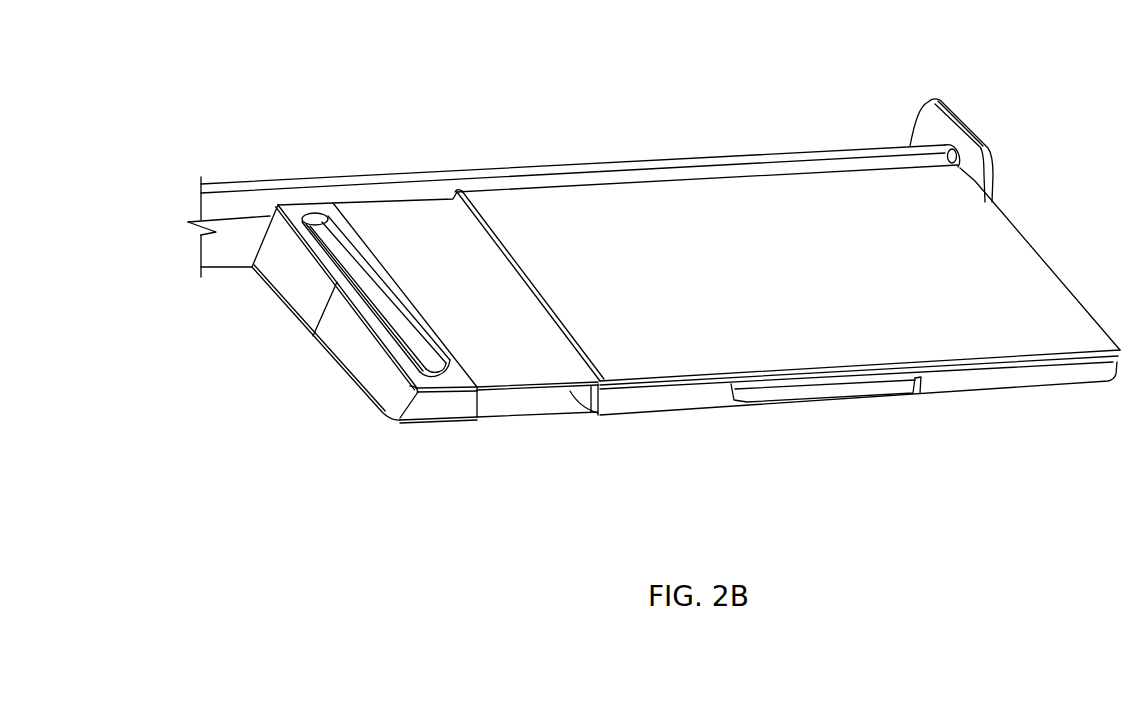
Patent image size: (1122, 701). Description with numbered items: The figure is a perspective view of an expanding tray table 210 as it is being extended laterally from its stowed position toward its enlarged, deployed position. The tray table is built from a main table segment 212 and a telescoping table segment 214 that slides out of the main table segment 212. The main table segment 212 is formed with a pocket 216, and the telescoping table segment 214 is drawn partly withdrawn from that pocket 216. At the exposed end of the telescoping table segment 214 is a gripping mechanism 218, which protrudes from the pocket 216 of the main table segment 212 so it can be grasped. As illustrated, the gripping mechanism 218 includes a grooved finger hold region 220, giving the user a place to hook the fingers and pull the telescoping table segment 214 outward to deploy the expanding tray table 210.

The expanding tray table 210 is at (268, 131).
The main table segment 212 is at (784, 275).
The telescoping table segment 214 is at (372, 331).
The pocket 216 is at (562, 402).
The gripping mechanism 218 is at (448, 425).
The finger hold region 220 is at (376, 274).